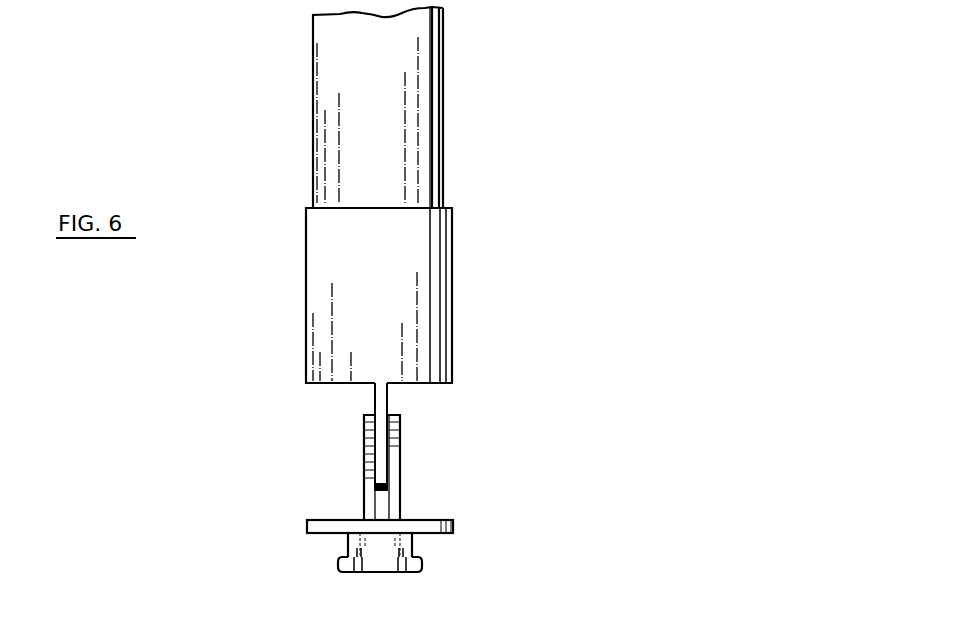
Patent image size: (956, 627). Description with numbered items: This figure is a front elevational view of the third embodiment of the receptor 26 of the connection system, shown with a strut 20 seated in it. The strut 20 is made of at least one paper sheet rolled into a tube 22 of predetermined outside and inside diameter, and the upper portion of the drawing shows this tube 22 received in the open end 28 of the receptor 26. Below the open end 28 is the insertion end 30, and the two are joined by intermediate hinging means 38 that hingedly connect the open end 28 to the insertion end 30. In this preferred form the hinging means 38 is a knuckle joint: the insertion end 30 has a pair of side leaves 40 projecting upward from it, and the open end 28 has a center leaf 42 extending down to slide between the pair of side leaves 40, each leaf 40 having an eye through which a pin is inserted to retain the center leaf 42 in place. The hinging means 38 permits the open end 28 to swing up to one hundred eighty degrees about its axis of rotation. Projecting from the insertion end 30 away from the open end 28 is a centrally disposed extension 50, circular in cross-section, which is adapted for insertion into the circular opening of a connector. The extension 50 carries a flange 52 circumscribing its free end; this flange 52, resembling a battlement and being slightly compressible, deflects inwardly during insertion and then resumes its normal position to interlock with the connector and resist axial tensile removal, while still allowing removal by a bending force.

The strut 20 is at (424, 104).
The tube 22 is at (436, 107).
The receptor 26 is at (512, 295).
The open end 28 is at (433, 240).
The insertion end 30 is at (454, 525).
The hinging means 38 is at (443, 477).
The side leaves 40 is at (370, 470).
The center leaf 42 is at (378, 397).
The extension 50 is at (348, 540).
The flange 52 is at (420, 562).